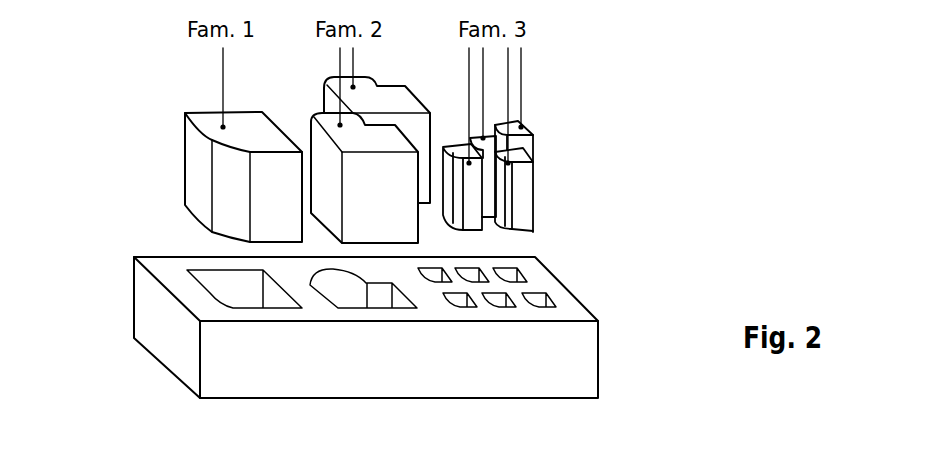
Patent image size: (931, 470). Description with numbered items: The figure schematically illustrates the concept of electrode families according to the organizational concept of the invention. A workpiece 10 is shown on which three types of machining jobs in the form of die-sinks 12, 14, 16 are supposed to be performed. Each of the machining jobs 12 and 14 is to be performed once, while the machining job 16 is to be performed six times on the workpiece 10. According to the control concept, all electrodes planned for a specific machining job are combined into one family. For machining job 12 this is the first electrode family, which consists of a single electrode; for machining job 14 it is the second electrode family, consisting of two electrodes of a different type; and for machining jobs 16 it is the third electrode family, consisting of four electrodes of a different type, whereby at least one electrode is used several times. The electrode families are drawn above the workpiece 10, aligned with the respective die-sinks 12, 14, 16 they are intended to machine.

The workpiece 10 is at (562, 358).
The die-sink 12 is at (233, 283).
The die-sink 14 is at (345, 292).
The die-sinks 16 is at (542, 300).